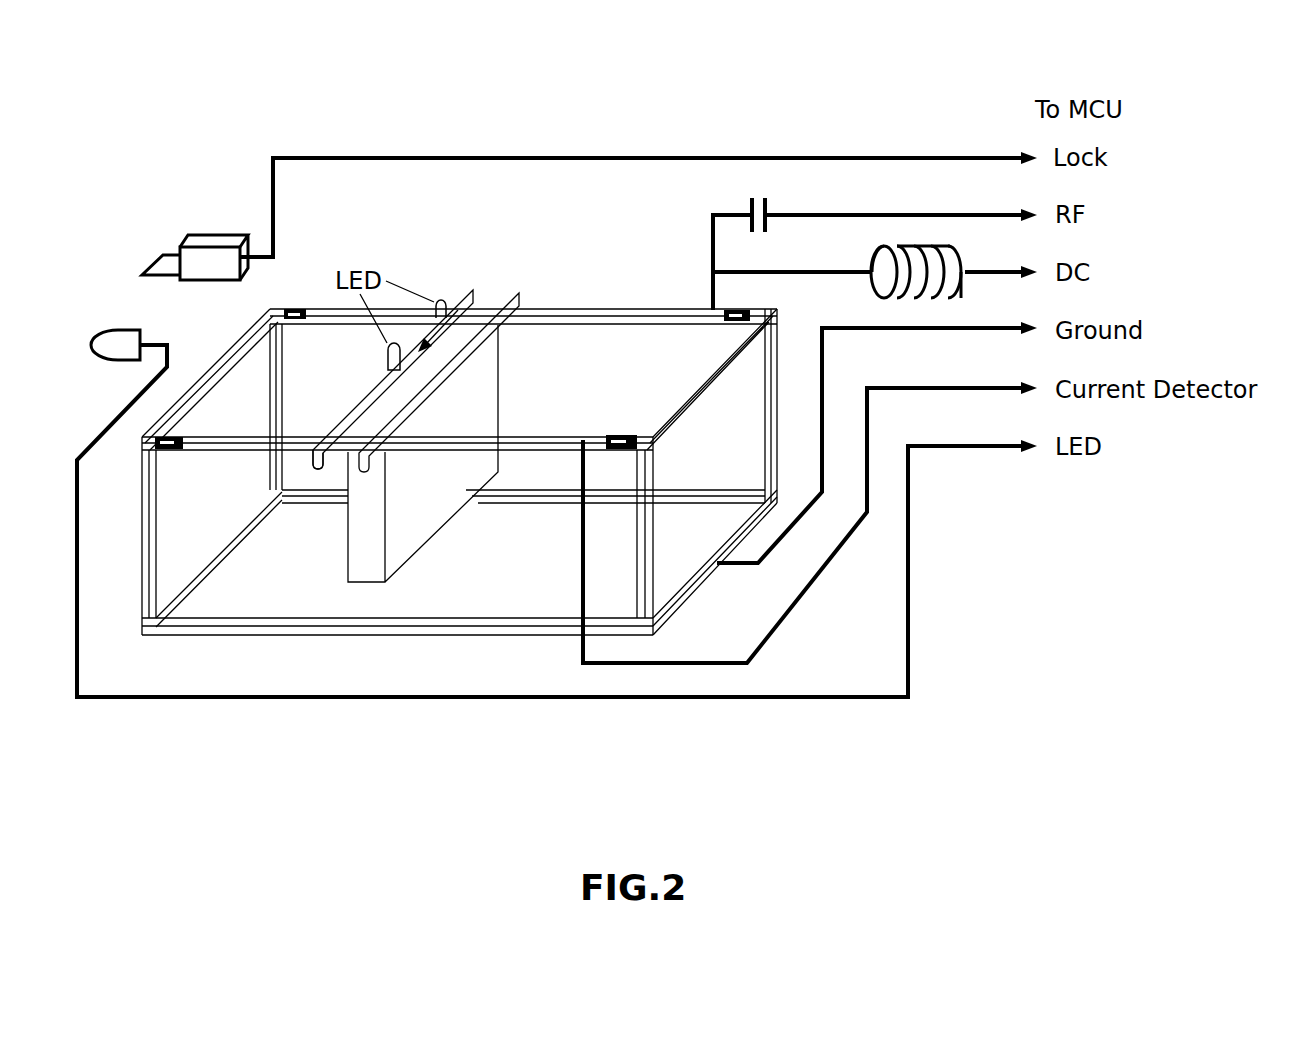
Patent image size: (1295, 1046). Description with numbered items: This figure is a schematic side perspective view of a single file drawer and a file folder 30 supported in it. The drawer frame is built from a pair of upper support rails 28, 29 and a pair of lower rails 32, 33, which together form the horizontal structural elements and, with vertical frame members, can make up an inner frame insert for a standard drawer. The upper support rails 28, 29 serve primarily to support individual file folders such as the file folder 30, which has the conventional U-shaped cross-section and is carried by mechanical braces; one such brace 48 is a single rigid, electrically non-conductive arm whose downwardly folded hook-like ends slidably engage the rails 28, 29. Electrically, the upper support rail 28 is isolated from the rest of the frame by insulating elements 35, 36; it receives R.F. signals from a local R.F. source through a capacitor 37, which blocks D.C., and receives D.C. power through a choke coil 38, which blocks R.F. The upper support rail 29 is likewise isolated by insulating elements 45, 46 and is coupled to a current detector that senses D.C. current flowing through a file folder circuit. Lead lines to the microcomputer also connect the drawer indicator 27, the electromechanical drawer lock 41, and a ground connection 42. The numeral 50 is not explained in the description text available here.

The drawer indicator 27 is at (104, 343).
The upper support rail 28 is at (652, 312).
The upper support rail 29 is at (508, 440).
The file folder 30 is at (476, 289).
The lower rail 32 is at (527, 500).
The lower rail 33 is at (425, 630).
The insulating element 35 is at (293, 306).
The insulating element 36 is at (745, 310).
The capacitor 37 is at (762, 199).
The choke coil 38 is at (933, 276).
The electromechanical drawer lock 41 is at (212, 265).
The ground connection 42 is at (827, 372).
The insulating element 45 is at (182, 450).
The insulating element 46 is at (632, 430).
The brace 48 is at (518, 292).
The rod end pin 50 is at (352, 420).